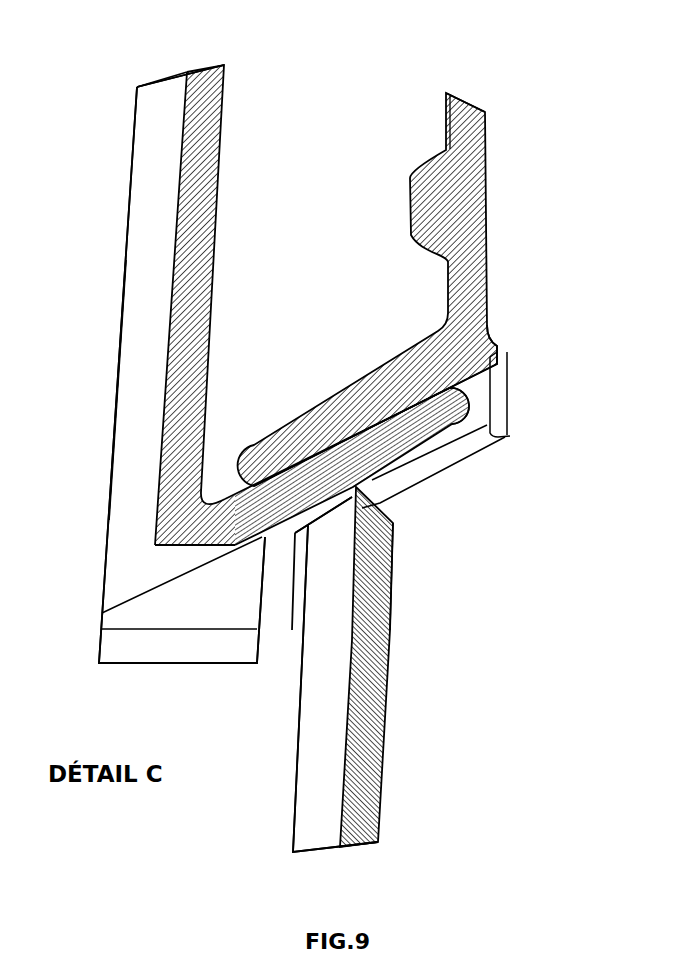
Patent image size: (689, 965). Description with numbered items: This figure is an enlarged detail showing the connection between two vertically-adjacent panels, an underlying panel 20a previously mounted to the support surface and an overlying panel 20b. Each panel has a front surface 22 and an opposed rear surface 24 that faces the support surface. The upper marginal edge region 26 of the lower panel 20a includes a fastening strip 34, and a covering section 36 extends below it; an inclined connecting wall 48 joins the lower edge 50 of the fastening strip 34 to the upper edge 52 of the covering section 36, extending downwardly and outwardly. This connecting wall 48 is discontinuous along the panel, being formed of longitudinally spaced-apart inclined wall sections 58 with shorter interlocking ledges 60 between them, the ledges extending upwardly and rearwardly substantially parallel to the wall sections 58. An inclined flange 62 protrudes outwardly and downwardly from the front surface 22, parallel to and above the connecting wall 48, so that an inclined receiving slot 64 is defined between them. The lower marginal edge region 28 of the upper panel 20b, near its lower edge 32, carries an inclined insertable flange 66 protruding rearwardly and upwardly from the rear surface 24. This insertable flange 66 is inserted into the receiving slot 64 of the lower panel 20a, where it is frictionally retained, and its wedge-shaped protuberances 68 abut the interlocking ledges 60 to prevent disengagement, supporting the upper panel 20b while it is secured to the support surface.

The underlying panel 20a is at (222, 773).
The overlying panel 20b is at (86, 137).
The front surface 22 is at (127, 258).
The rear surface 24 is at (215, 172).
The upper marginal edge region 26 is at (487, 243).
The lower marginal edge region 28 is at (115, 415).
The lower edge 32 is at (100, 662).
The fastening strip 34 is at (487, 182).
The covering section 36 is at (130, 192).
The inclined connecting wall 48 is at (497, 443).
The lower edge of the fastening strip 50 is at (488, 313).
The upper edge of the covering section 52 is at (292, 632).
The inclined wall sections 58 is at (410, 468).
The interlocking ledges 60 is at (393, 548).
The inclined flange 62 is at (338, 420).
The inclined receiving slot 64 is at (464, 424).
The inclined insertable flange 66 is at (457, 402).
The protuberances 68 is at (415, 460).